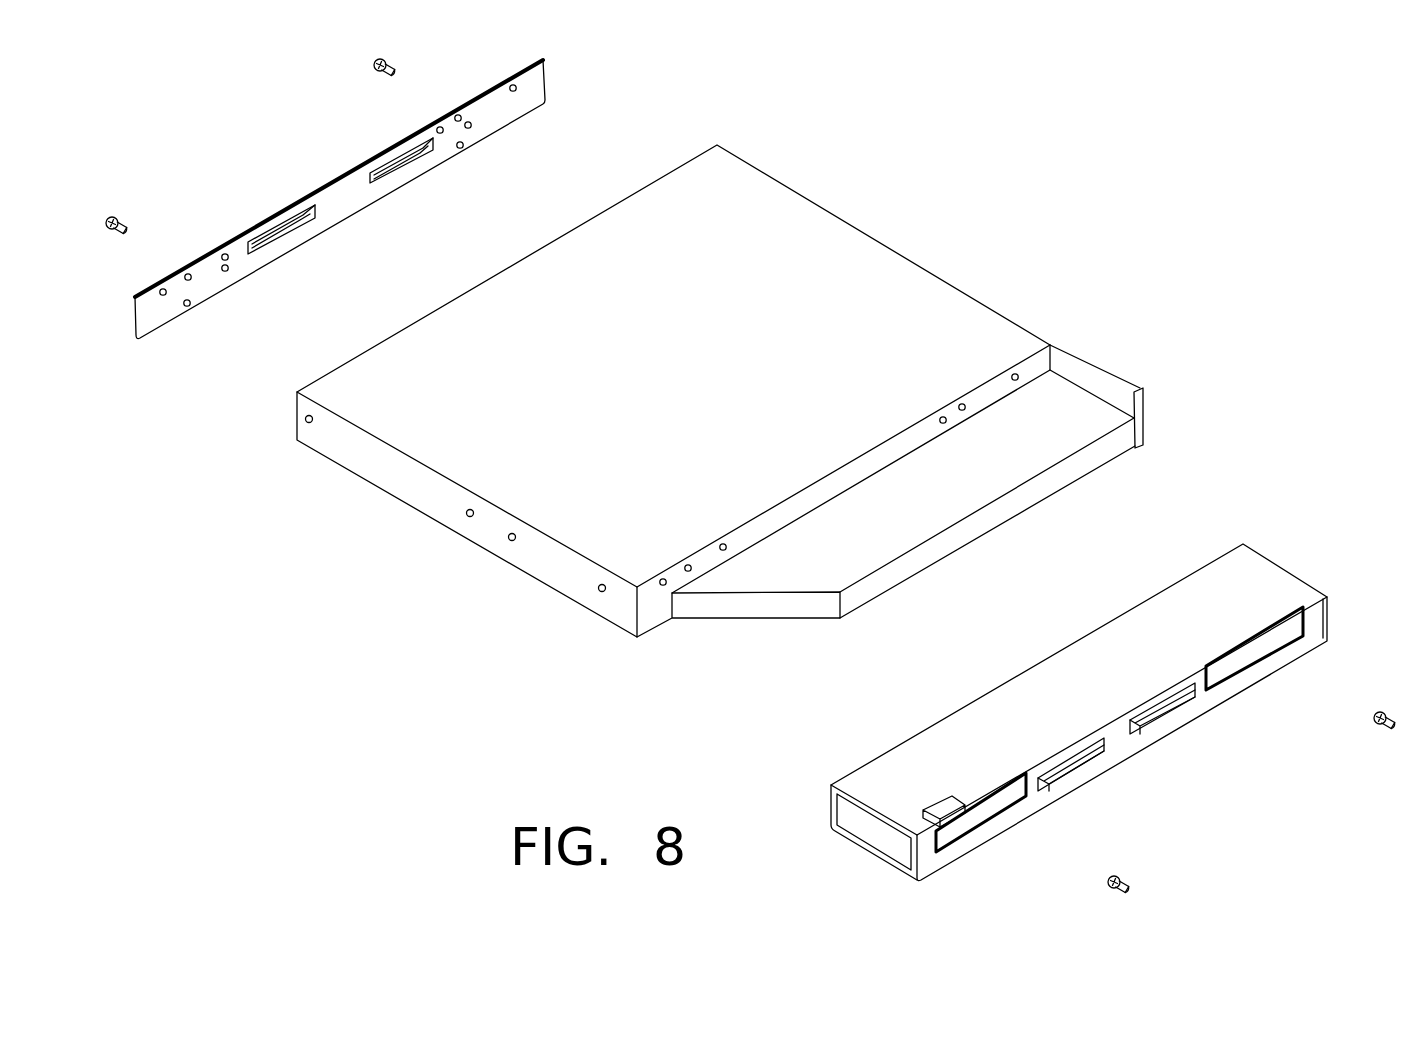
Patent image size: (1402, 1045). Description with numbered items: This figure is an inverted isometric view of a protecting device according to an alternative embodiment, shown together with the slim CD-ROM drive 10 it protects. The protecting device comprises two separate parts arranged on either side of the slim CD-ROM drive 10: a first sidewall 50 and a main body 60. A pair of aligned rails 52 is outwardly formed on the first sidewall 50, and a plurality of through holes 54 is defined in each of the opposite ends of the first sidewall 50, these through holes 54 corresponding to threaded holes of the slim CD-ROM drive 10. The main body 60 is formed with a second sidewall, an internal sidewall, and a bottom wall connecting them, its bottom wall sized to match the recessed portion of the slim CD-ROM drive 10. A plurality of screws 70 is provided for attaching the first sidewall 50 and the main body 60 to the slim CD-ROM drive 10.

The slim CD-ROM drive 10 is at (882, 262).
The first sidewall 50 is at (337, 198).
The rails 52 is at (397, 155).
The through holes 54 is at (471, 128).
The main body 60 is at (1266, 572).
The screws 70 is at (393, 63).